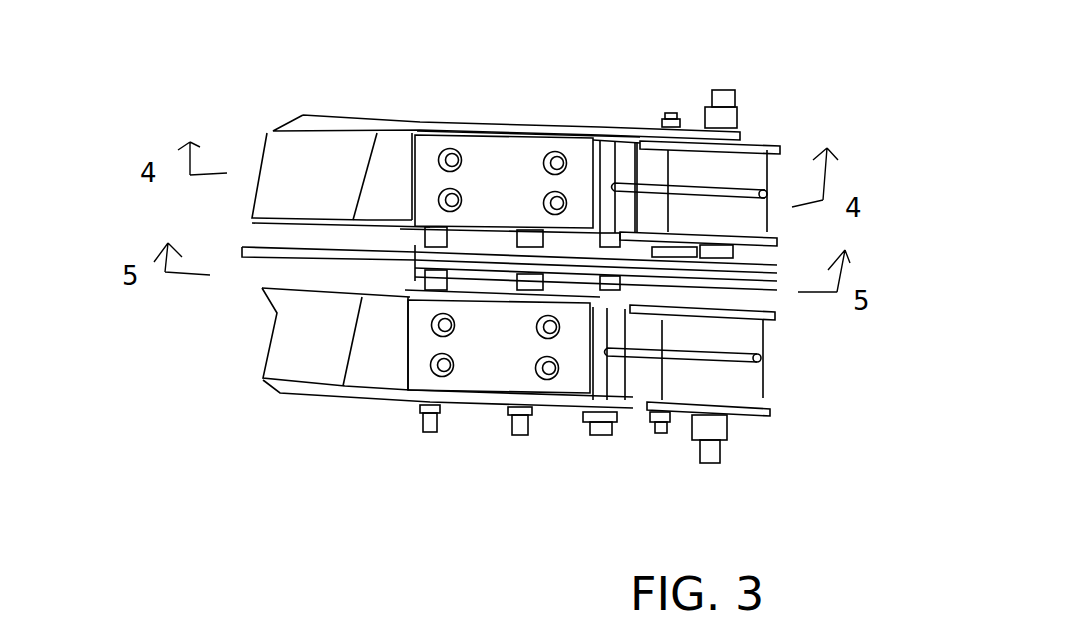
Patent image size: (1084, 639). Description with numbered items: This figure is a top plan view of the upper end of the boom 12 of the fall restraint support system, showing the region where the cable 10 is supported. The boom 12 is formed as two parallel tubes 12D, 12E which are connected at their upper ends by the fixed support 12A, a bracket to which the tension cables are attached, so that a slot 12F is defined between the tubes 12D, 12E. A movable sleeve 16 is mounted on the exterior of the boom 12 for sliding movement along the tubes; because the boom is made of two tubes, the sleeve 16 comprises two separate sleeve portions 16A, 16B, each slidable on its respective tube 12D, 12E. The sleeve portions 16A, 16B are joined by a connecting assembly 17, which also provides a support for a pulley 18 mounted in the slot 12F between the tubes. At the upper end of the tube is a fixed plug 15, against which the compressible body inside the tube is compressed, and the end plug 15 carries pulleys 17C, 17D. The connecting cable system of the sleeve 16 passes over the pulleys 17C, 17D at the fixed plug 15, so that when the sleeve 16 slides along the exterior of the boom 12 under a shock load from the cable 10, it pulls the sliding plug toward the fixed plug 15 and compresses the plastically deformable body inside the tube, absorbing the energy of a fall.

The cable 10 is at (255, 253).
The boom 12 is at (350, 140).
The fixed support 12A is at (538, 112).
The parallel tube 12D is at (294, 142).
The parallel tube 12E is at (272, 345).
The slot 12F is at (353, 238).
The fixed plug 15 is at (655, 158).
The movable sleeve 16 is at (503, 114).
The sleeve portion 16A is at (562, 158).
The sleeve portion 16B is at (562, 372).
The connecting assembly 17 is at (452, 232).
The pulley 17C is at (755, 167).
The pulley 17D is at (752, 333).
The pulley 18 is at (668, 262).